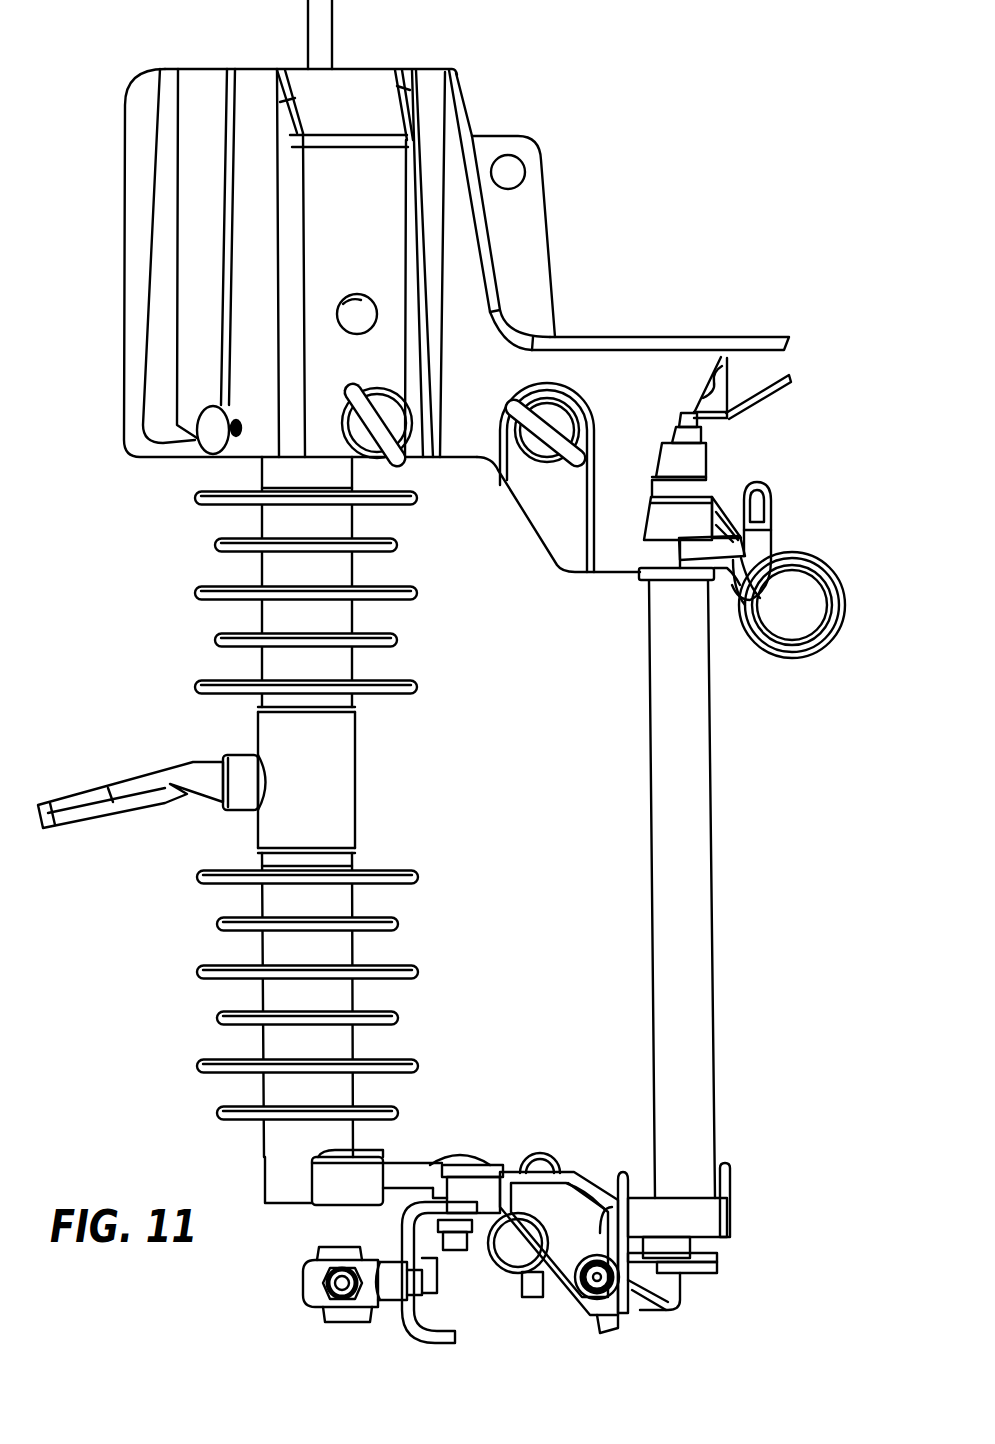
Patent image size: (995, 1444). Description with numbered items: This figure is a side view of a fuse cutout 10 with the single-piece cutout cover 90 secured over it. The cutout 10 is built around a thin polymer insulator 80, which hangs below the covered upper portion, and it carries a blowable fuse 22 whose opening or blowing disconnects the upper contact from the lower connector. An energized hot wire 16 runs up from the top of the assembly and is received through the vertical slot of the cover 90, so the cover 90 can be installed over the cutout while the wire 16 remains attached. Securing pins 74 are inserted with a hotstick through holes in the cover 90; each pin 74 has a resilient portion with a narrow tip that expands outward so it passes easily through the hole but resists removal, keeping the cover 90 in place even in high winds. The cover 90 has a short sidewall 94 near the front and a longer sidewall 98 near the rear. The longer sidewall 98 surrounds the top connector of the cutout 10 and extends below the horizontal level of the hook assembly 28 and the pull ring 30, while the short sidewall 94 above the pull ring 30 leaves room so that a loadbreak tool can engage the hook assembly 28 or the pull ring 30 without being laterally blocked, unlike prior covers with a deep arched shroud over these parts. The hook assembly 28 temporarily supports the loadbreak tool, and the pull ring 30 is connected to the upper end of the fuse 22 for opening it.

The fuse cutout 10 is at (802, 763).
The hot wire 16 is at (333, 4).
The blowable fuse 22 is at (713, 866).
The hook assembly 28 is at (774, 498).
The pull ring 30 is at (791, 658).
The securing pin 74 is at (388, 448).
The polymer insulator 80 is at (197, 595).
The cutout cover 90 is at (658, 167).
The short sidewall 94 is at (792, 348).
The long sidewall 98 is at (625, 558).